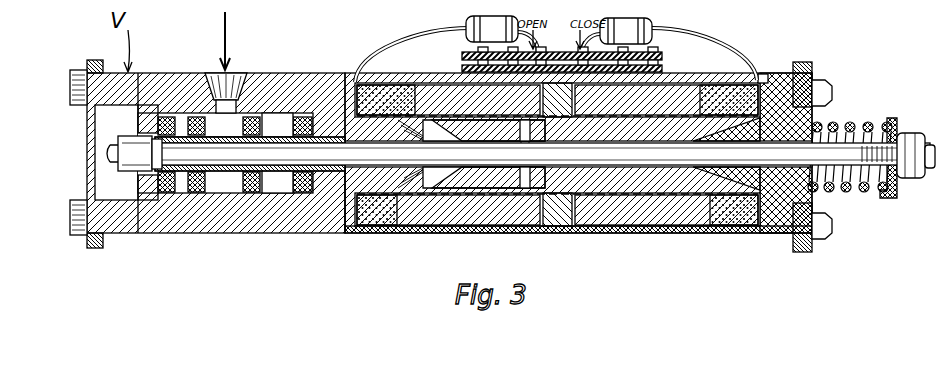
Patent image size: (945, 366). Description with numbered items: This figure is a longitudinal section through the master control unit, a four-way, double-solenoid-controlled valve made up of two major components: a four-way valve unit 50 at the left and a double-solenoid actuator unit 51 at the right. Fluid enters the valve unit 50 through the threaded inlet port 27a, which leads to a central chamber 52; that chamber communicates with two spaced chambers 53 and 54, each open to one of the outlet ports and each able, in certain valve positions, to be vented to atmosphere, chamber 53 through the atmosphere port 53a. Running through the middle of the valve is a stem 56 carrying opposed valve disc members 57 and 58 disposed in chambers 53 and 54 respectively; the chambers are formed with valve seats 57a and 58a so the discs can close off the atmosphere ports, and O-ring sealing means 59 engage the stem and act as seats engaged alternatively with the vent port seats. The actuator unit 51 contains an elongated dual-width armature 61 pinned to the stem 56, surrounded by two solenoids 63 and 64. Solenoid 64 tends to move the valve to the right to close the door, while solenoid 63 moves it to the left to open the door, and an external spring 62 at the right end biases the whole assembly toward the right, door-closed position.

The four-way valve unit 50 is at (231, 238).
The double-solenoid actuator unit 51 is at (561, 238).
The central chamber 52 is at (198, 178).
The chamber 53 is at (157, 115).
The atmosphere vent port 53a is at (92, 153).
The chamber 54 is at (300, 104).
The stem 56 is at (545, 155).
The valve disc member 57 is at (160, 126).
The valve seat 57a is at (158, 183).
The valve disc member 58 is at (293, 118).
The valve seat 58a is at (341, 233).
The O-ring sealing means 59 is at (198, 192).
The dual-width armature 61 is at (670, 128).
The external spring 62 is at (835, 126).
The solenoid 63 is at (418, 106).
The solenoid 64 is at (665, 96).
The inlet port 27a is at (237, 74).